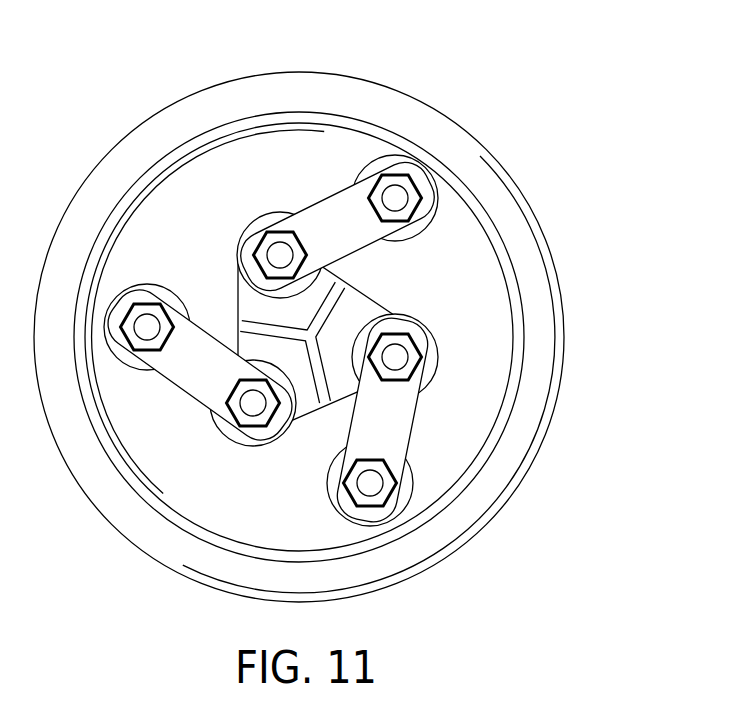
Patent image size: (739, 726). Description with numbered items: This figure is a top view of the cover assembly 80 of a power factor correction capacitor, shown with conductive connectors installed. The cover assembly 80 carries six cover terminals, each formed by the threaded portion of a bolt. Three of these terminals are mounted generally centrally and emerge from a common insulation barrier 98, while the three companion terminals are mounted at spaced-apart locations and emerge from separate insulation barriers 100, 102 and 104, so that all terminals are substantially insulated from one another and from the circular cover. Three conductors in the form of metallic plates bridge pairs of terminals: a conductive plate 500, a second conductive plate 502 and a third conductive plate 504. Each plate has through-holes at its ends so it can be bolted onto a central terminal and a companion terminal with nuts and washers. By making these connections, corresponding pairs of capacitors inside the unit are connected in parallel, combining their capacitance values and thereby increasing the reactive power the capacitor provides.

The cover assembly 80 is at (538, 81).
The common insulation barrier 98 is at (355, 300).
The insulation barrier 100 is at (200, 333).
The insulation barrier 102 is at (341, 424).
The insulation barrier 104 is at (337, 226).
The conductive plate 500 is at (338, 226).
The conductive plate 502 is at (383, 420).
The conductive plate 504 is at (200, 365).